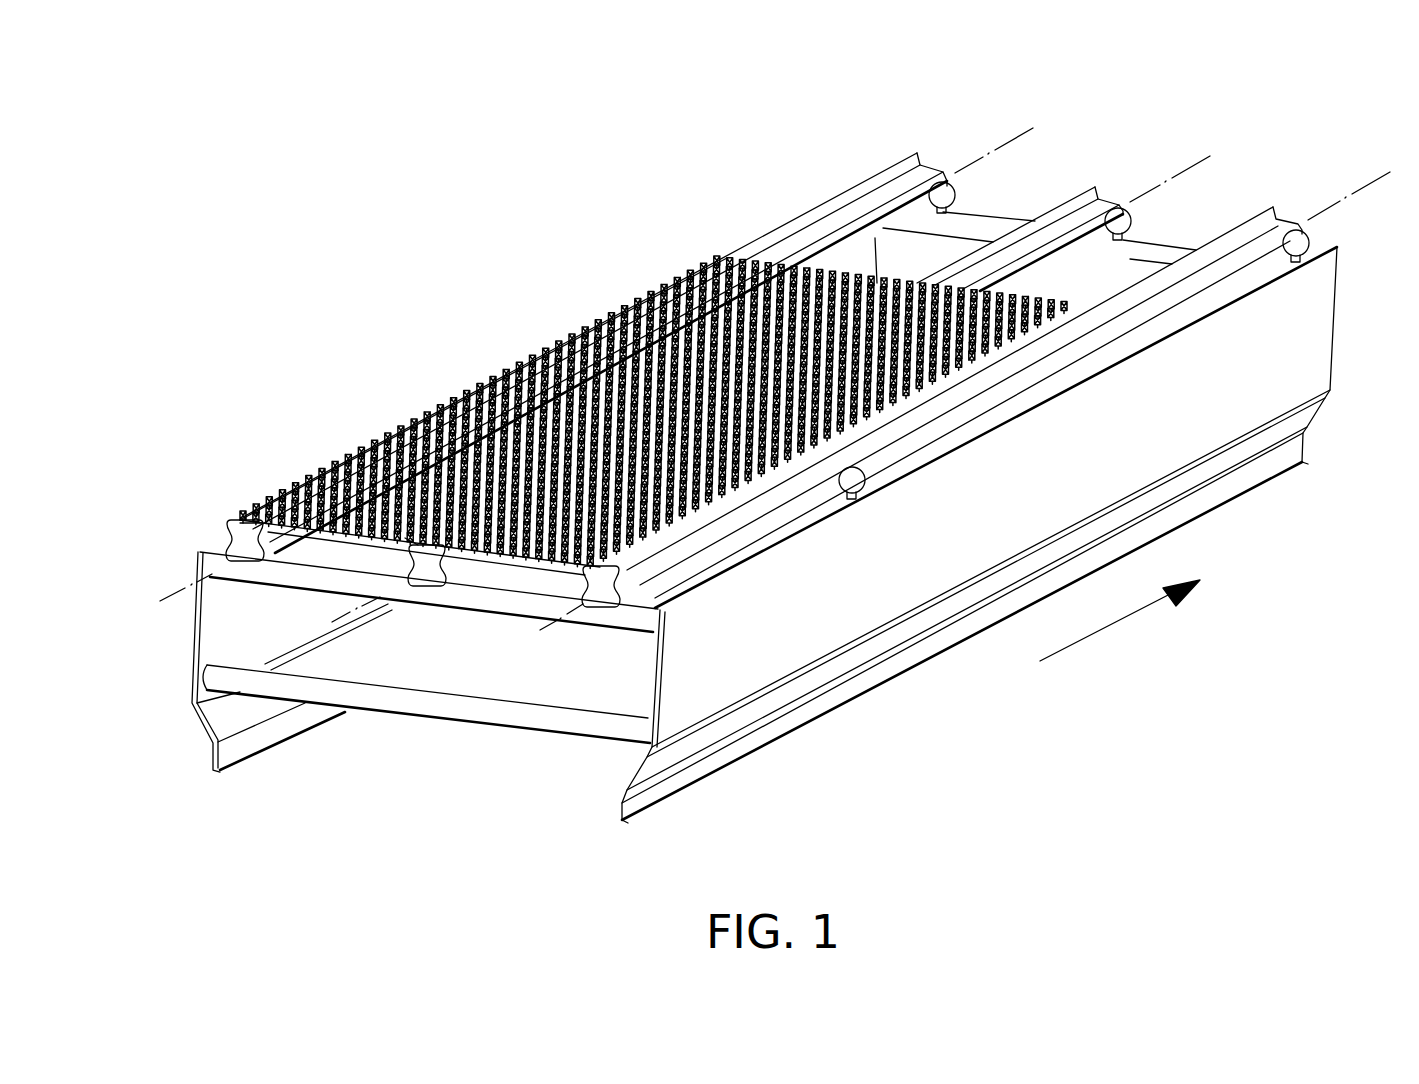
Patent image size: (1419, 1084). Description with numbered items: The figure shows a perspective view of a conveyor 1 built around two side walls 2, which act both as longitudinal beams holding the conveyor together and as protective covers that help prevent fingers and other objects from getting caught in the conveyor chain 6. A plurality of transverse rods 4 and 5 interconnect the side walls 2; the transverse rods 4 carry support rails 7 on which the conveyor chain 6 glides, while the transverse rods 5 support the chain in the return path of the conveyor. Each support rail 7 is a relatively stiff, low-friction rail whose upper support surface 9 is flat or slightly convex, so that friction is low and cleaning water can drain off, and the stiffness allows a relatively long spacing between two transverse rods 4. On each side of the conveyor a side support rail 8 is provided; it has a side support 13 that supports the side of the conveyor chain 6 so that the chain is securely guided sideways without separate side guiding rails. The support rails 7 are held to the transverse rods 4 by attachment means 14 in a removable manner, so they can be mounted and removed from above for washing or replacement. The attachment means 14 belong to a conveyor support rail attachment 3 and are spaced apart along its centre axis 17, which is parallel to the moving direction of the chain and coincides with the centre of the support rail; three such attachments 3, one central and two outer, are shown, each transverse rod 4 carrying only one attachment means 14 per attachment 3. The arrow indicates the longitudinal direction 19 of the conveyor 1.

The conveyor 1 is at (471, 245).
The side wall 2 is at (235, 628).
The conveyor support rail attachment 3 is at (621, 271).
The transverse rod with attachment means 4 is at (537, 602).
The transverse rod 5 is at (352, 689).
The conveyor chain 6 is at (397, 441).
The support rail 7 is at (410, 592).
The side support rail 8 is at (236, 565).
The upper support surface 9 is at (413, 540).
The side support 13 is at (238, 521).
The attachment means 14 is at (866, 490).
The centre axis 17 is at (1019, 136).
The longitudinal direction 19 is at (1108, 672).